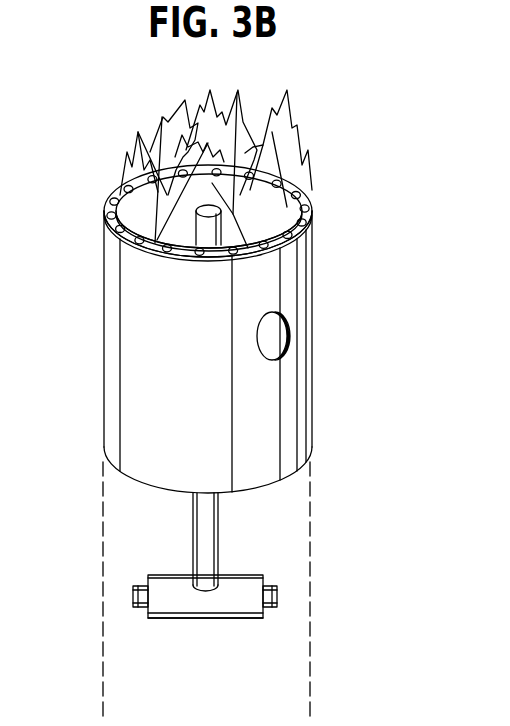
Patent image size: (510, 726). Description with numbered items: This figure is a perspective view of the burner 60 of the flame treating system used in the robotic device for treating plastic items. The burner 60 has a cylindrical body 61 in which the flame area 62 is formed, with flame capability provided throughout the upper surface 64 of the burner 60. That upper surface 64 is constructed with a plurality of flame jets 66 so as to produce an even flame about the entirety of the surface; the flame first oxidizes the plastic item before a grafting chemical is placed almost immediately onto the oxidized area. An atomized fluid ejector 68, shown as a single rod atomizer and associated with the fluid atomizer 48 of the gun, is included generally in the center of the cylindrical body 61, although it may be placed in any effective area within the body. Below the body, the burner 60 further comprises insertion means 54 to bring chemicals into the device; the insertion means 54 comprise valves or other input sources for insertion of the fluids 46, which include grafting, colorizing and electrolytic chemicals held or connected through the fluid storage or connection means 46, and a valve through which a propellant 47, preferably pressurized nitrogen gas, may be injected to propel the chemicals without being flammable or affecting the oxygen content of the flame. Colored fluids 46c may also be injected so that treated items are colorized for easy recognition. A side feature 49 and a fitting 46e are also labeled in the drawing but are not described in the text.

The flame jets 66 is at (165, 157).
The upper surface 64 is at (105, 199).
The flame area 62 is at (303, 217).
The atomized fluid ejector 68 is at (227, 223).
The burner 60 is at (155, 355).
The cylindrical body 61 is at (248, 390).
The side port 49 is at (296, 347).
The fluid atomizer 48 is at (208, 545).
The fluid storage or connection means 46 is at (130, 590).
The insertion means 54 is at (200, 605).
The left nub 46e is at (128, 596).
The colored fluids 46c is at (130, 610).
The propellant 47 is at (279, 595).